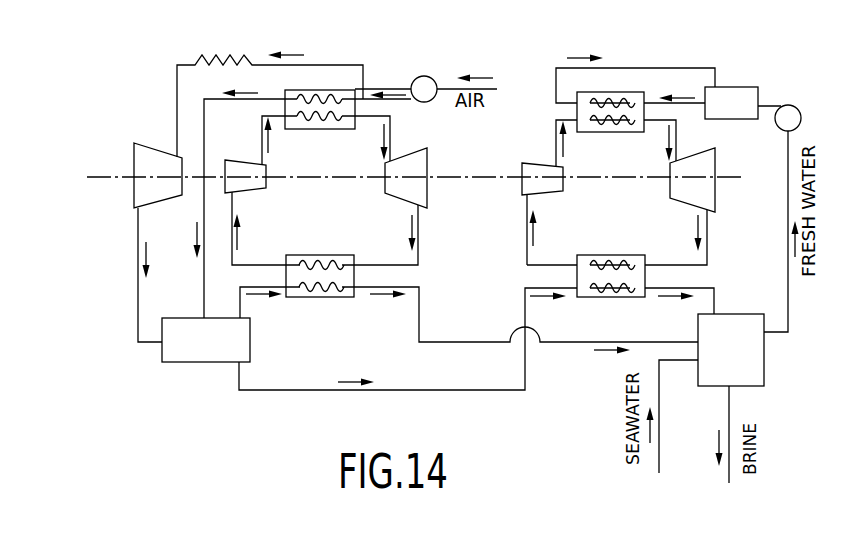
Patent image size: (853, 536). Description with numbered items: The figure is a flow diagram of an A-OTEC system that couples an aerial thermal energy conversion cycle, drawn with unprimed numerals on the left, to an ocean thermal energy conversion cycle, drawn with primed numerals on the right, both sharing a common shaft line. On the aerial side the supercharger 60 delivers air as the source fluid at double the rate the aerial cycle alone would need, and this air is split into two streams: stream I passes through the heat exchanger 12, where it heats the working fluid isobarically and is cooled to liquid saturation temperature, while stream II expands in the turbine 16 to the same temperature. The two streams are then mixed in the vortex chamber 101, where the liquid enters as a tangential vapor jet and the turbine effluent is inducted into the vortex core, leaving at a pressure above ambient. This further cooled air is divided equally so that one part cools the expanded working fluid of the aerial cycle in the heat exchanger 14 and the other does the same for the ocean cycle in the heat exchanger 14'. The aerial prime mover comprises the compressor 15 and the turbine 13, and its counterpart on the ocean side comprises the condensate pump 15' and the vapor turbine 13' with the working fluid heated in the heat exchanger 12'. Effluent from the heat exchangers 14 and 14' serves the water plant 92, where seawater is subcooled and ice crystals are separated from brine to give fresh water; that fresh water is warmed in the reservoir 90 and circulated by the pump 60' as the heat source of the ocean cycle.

The turbine 16 is at (146, 146).
The heat exchanger 12 is at (310, 97).
The compressor 15 is at (255, 186).
The turbine 13 is at (409, 164).
The heat exchanger 14 is at (320, 262).
The supercharger 60 is at (437, 72).
The vortex chamber 101 is at (203, 362).
The heat exchanger 12' is at (610, 100).
The condensate pump 15' is at (552, 189).
The vapor turbine 13' is at (714, 180).
The heat exchanger 14' is at (611, 261).
The reservoir 90 is at (754, 71).
The pump 60' is at (808, 108).
The water plant 92 is at (764, 350).